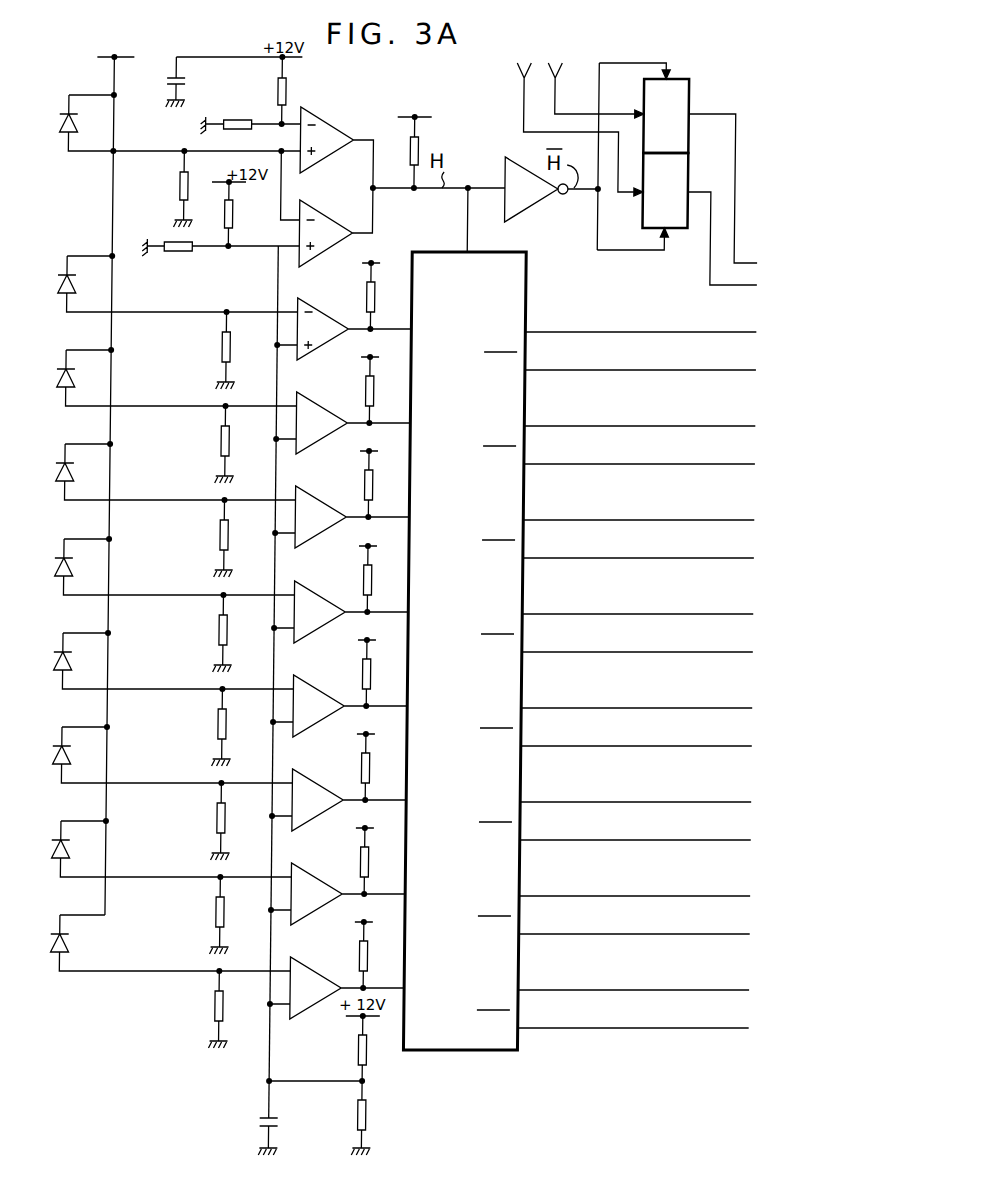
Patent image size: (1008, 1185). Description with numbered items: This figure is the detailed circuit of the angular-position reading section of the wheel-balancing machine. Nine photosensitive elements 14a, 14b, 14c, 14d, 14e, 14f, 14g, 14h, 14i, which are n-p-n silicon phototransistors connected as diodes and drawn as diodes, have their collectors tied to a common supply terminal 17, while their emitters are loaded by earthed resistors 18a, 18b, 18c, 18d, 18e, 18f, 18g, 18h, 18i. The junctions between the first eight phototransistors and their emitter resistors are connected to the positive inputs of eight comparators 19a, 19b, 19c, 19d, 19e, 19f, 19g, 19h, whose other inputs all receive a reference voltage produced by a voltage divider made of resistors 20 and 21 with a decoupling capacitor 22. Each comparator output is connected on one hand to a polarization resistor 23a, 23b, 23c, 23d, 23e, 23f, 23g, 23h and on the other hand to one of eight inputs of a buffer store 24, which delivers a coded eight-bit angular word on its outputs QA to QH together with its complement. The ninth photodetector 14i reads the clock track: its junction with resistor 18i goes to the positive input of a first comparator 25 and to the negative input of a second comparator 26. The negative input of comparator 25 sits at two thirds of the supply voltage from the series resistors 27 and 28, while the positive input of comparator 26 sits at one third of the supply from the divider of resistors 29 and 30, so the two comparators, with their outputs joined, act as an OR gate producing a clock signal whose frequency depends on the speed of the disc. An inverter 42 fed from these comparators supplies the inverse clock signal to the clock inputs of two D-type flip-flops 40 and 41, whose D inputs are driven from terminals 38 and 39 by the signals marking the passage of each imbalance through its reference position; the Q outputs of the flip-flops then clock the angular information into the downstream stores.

The photosensitive element 14a is at (60, 941).
The photosensitive element 14b is at (60, 847).
The photosensitive element 14c is at (60, 753).
The photosensitive element 14d is at (60, 659).
The photosensitive element 14e is at (60, 565).
The photosensitive element 14f is at (60, 470).
The photosensitive element 14g is at (60, 376).
The photosensitive element 14h is at (60, 282).
The photosensitive element 14i is at (60, 123).
The supply terminal 17 is at (124, 57).
The emitter resistor 18a is at (226, 1011).
The emitter resistor 18b is at (226, 917).
The emitter resistor 18c is at (226, 823).
The emitter resistor 18d is at (226, 729).
The emitter resistor 18e is at (226, 635).
The emitter resistor 18f is at (226, 540).
The emitter resistor 18g is at (226, 446).
The emitter resistor 18h is at (226, 352).
The emitter resistor 18i is at (182, 187).
The comparator 19a is at (301, 957).
The comparator 19b is at (301, 863).
The comparator 19c is at (301, 769).
The comparator 19d is at (301, 675).
The comparator 19e is at (301, 581).
The comparator 19f is at (301, 486).
The comparator 19g is at (301, 392).
The comparator 19h is at (301, 298).
The resistor 20 is at (370, 1050).
The resistor 21 is at (370, 1115).
The decoupling capacitor 22 is at (279, 1117).
The polarization resistor 23a is at (370, 956).
The polarization resistor 23b is at (370, 862).
The polarization resistor 23c is at (370, 768).
The polarization resistor 23d is at (370, 674).
The polarization resistor 23e is at (370, 580).
The polarization resistor 23f is at (370, 485).
The polarization resistor 23g is at (370, 391).
The polarization resistor 23h is at (370, 297).
The buffer store 24 is at (453, 1052).
The first comparator 25 is at (324, 124).
The second comparator 26 is at (326, 218).
The resistor 27 is at (287, 93).
The resistor 28 is at (239, 120).
The resistor 29 is at (235, 215).
The resistor 30 is at (176, 251).
The terminal 38 is at (529, 80).
The terminal 39 is at (562, 78).
The D-type flip-flop circuit 40 is at (681, 229).
The D-type flip-flop circuit 41 is at (681, 78).
The inverter 42 is at (531, 207).